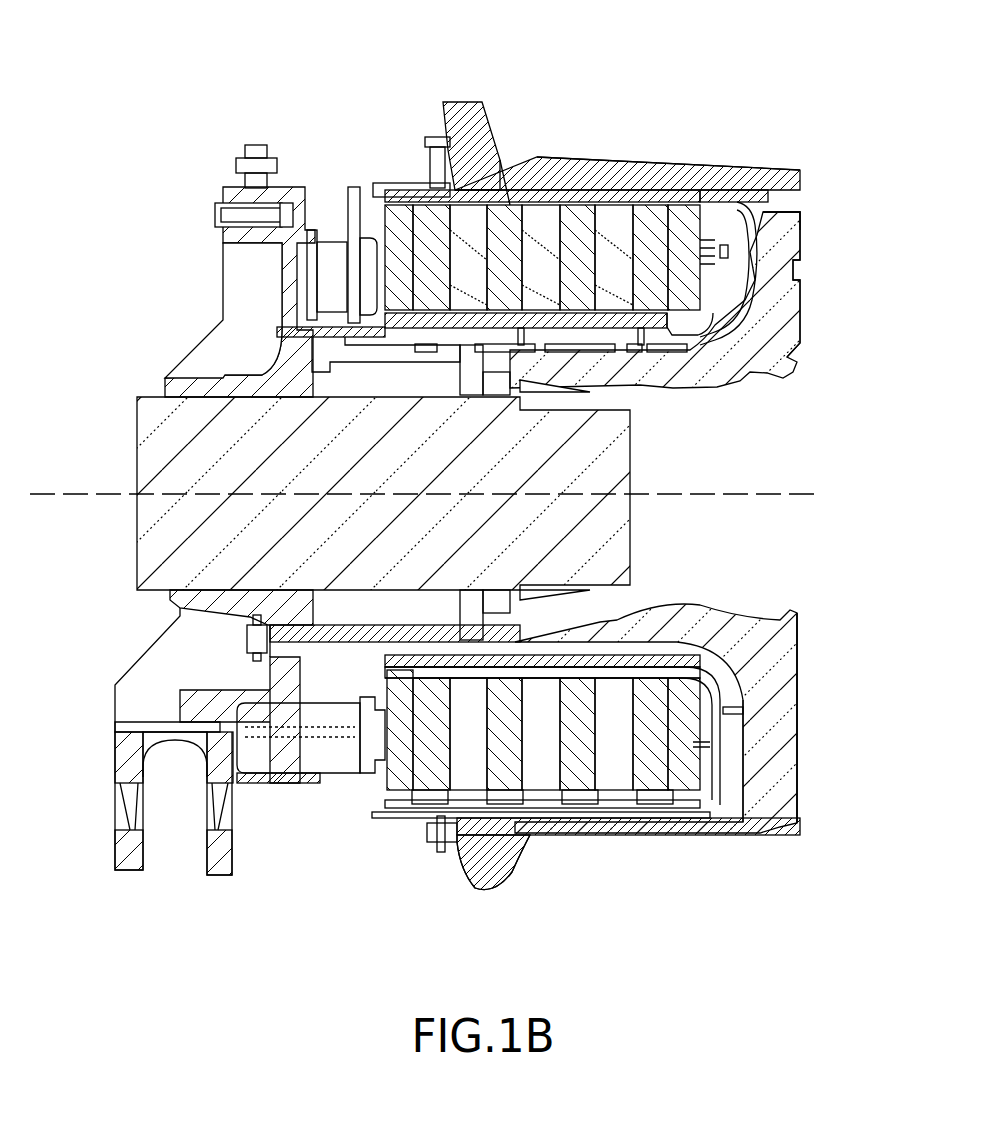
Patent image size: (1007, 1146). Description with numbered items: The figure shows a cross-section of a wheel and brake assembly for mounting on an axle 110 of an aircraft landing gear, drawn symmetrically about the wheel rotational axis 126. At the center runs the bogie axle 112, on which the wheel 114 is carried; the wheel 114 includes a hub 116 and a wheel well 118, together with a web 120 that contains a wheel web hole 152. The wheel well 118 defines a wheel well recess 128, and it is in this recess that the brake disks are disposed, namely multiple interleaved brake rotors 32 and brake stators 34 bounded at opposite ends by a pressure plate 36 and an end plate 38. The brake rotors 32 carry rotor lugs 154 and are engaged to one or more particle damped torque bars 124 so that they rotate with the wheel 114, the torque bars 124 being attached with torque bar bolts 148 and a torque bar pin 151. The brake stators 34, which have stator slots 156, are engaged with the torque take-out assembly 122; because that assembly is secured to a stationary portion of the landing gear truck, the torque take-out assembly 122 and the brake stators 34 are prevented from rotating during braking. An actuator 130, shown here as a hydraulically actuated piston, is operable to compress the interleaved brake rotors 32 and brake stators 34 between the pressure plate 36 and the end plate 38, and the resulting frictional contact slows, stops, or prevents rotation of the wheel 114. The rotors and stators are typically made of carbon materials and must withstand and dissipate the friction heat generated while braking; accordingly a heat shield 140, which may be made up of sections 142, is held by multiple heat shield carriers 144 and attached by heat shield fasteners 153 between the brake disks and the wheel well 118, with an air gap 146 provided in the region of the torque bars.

The wheel and brake assembly for mounting on an axle 110 is at (832, 102).
The bogie axle 112 is at (128, 437).
The wheel 114 is at (652, 142).
The hub 116 is at (600, 375).
The wheel well 118 is at (610, 835).
The web 120 is at (775, 705).
The torque take-out assembly 122 is at (440, 352).
The particle damped torque bar 124 is at (385, 183).
The wheel rotational axis 126 is at (705, 490).
The wheel well recess 128 is at (745, 250).
The actuator 130 is at (290, 802).
The heat shield 140 is at (420, 818).
The heat shield sections 142 is at (585, 160).
The heat shield carriers 144 is at (452, 842).
The air gap 146 is at (470, 185).
The torque bar bolts 148 is at (435, 170).
The torque bar pin 151 is at (740, 215).
The wheel web hole 152 is at (800, 230).
The heat shield fasteners 153 is at (441, 852).
The rotor lugs 154 is at (510, 205).
The stator slots 156 is at (455, 335).
The brake rotors 32 is at (418, 276).
The brake stators 34 is at (459, 276).
The pressure plate 36 is at (387, 276).
The end plate 38 is at (674, 276).